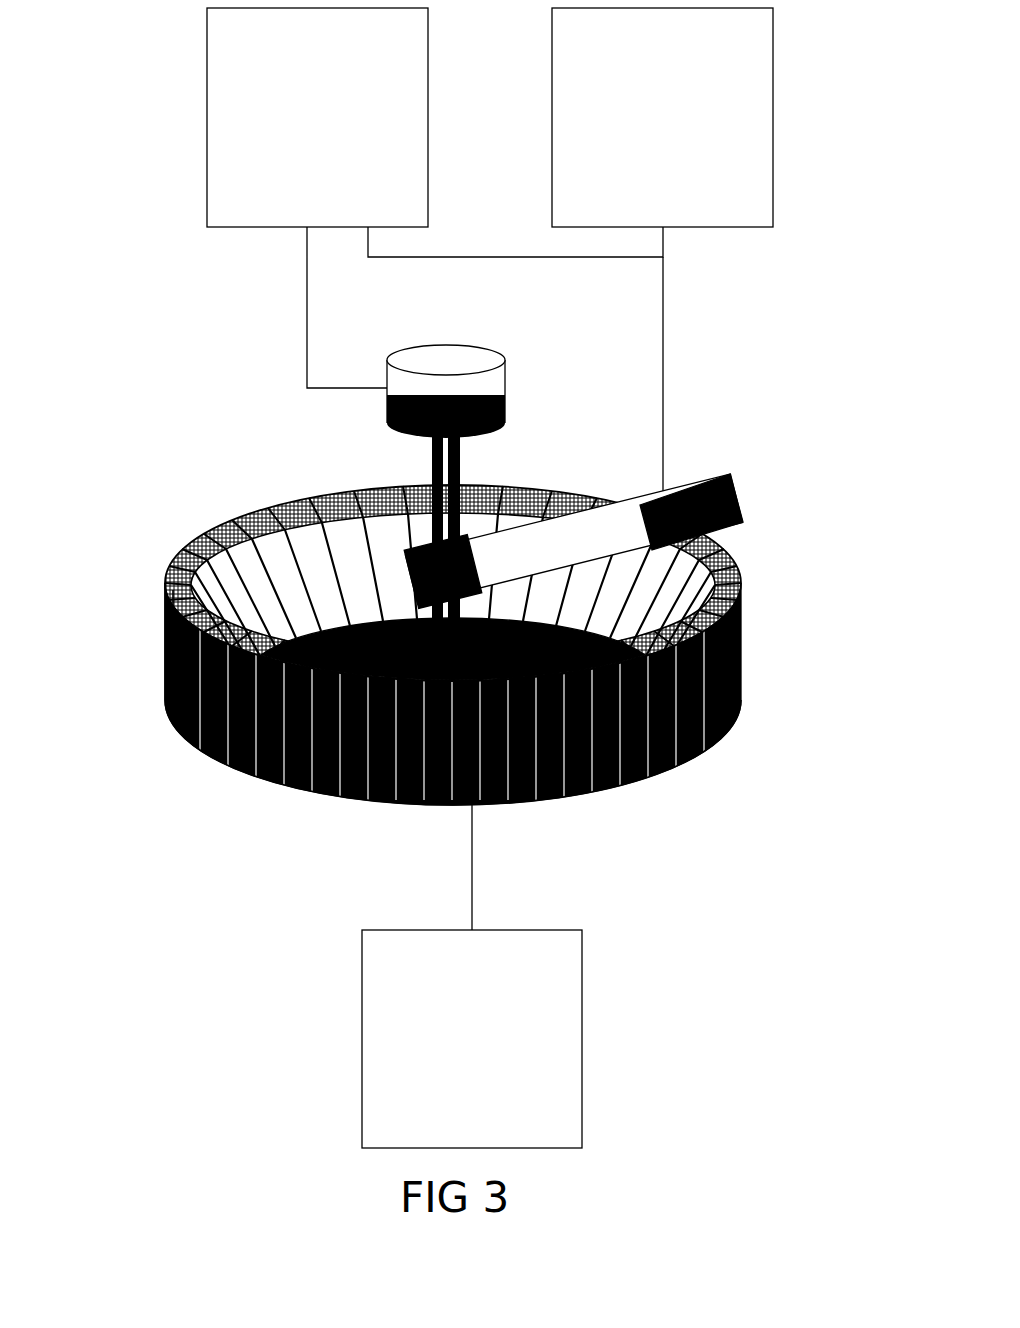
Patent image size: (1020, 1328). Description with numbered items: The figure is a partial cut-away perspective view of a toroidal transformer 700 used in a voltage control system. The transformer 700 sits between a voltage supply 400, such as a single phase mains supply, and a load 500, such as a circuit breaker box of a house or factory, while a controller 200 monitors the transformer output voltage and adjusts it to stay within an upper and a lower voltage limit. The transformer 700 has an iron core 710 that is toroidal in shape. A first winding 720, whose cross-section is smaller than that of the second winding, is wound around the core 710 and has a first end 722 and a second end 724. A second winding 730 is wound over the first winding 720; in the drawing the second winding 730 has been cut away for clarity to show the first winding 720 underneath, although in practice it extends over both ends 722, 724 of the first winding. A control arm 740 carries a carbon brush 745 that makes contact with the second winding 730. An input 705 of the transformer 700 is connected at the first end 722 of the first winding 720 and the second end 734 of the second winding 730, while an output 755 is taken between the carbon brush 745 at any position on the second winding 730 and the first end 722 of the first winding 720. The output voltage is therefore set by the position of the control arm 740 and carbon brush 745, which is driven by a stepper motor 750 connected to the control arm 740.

The controller 200 is at (317, 117).
The load 500 is at (662, 117).
The voltage supply 400 is at (472, 1039).
The toroidal transformer 700 is at (160, 440).
The input 705 is at (470, 803).
The core 710 is at (523, 800).
The first winding 720 is at (328, 806).
The first end 722 is at (407, 803).
The second end 724 is at (583, 792).
The second winding 730 is at (168, 728).
The second end 734 is at (245, 775).
The control arm 740 is at (727, 470).
The carbon brush 745 is at (680, 483).
The stepper motor 750 is at (478, 353).
The output 755 is at (663, 378).